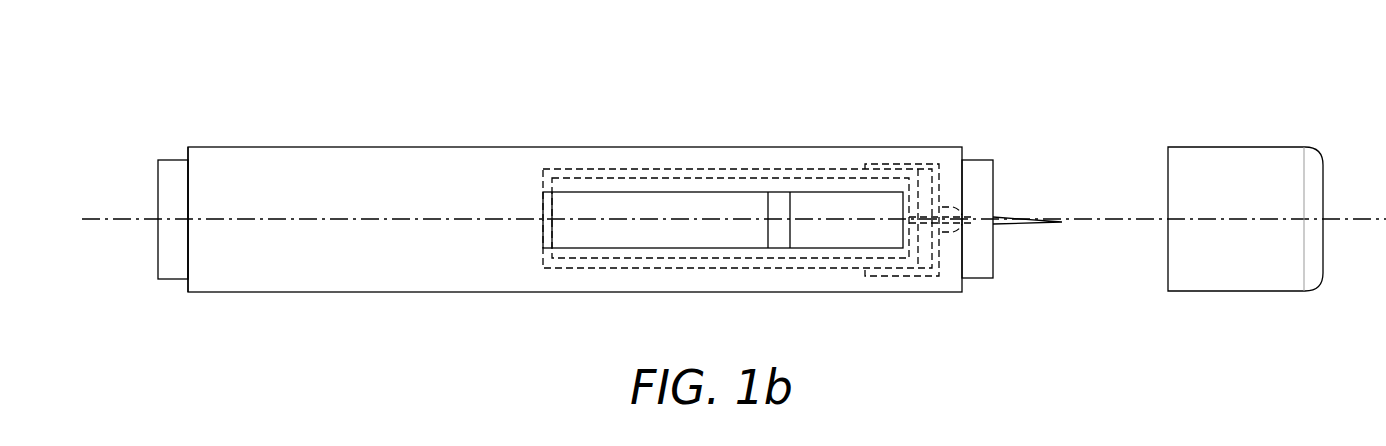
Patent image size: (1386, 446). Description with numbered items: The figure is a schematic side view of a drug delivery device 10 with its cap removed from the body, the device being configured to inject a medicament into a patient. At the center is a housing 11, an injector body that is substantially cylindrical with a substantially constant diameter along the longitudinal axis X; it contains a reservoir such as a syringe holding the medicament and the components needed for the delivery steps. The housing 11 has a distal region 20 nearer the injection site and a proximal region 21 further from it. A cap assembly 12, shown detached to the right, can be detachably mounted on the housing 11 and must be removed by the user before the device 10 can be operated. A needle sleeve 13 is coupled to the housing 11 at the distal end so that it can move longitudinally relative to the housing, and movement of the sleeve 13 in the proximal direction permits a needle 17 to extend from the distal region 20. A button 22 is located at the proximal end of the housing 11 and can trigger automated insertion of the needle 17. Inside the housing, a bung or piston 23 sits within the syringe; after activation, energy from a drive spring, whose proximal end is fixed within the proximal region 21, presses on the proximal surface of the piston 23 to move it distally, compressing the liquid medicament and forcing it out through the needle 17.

The drug delivery device 10 is at (920, 107).
The housing 11 is at (773, 157).
The cap assembly 12 is at (1238, 158).
The needle sleeve 13 is at (986, 168).
The needle 17 is at (1036, 215).
The distal region 20 is at (948, 282).
The proximal region 21 is at (209, 283).
The button 22 is at (173, 272).
The piston 23 is at (782, 238).